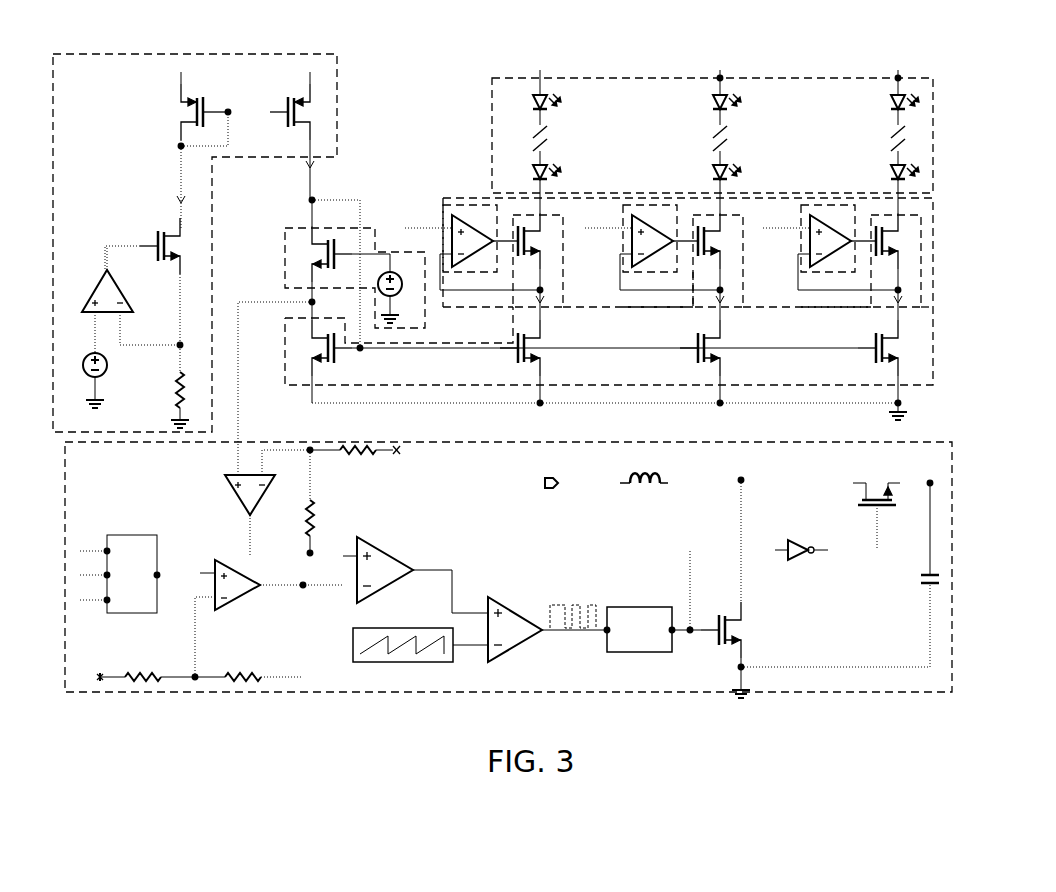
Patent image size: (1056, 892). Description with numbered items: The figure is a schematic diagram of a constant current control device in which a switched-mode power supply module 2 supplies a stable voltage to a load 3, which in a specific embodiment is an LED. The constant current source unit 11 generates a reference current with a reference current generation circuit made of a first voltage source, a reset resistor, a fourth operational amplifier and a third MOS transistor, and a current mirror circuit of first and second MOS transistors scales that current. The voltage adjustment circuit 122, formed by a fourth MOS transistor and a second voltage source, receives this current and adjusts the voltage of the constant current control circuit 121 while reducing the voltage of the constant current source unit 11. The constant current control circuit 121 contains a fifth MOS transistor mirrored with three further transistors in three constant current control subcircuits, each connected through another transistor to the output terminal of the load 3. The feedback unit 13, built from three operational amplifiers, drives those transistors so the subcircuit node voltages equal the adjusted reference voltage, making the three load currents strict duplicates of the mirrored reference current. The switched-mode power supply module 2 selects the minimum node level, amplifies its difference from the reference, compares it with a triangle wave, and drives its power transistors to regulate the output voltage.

The constant current source unit 11 is at (335, 97).
The voltage adjustment circuit 122 is at (325, 228).
The feedback unit 13 is at (472, 197).
The load 3 is at (936, 147).
The constant current control circuit 121 is at (657, 249).
The switched-mode power supply module 2 is at (952, 555).